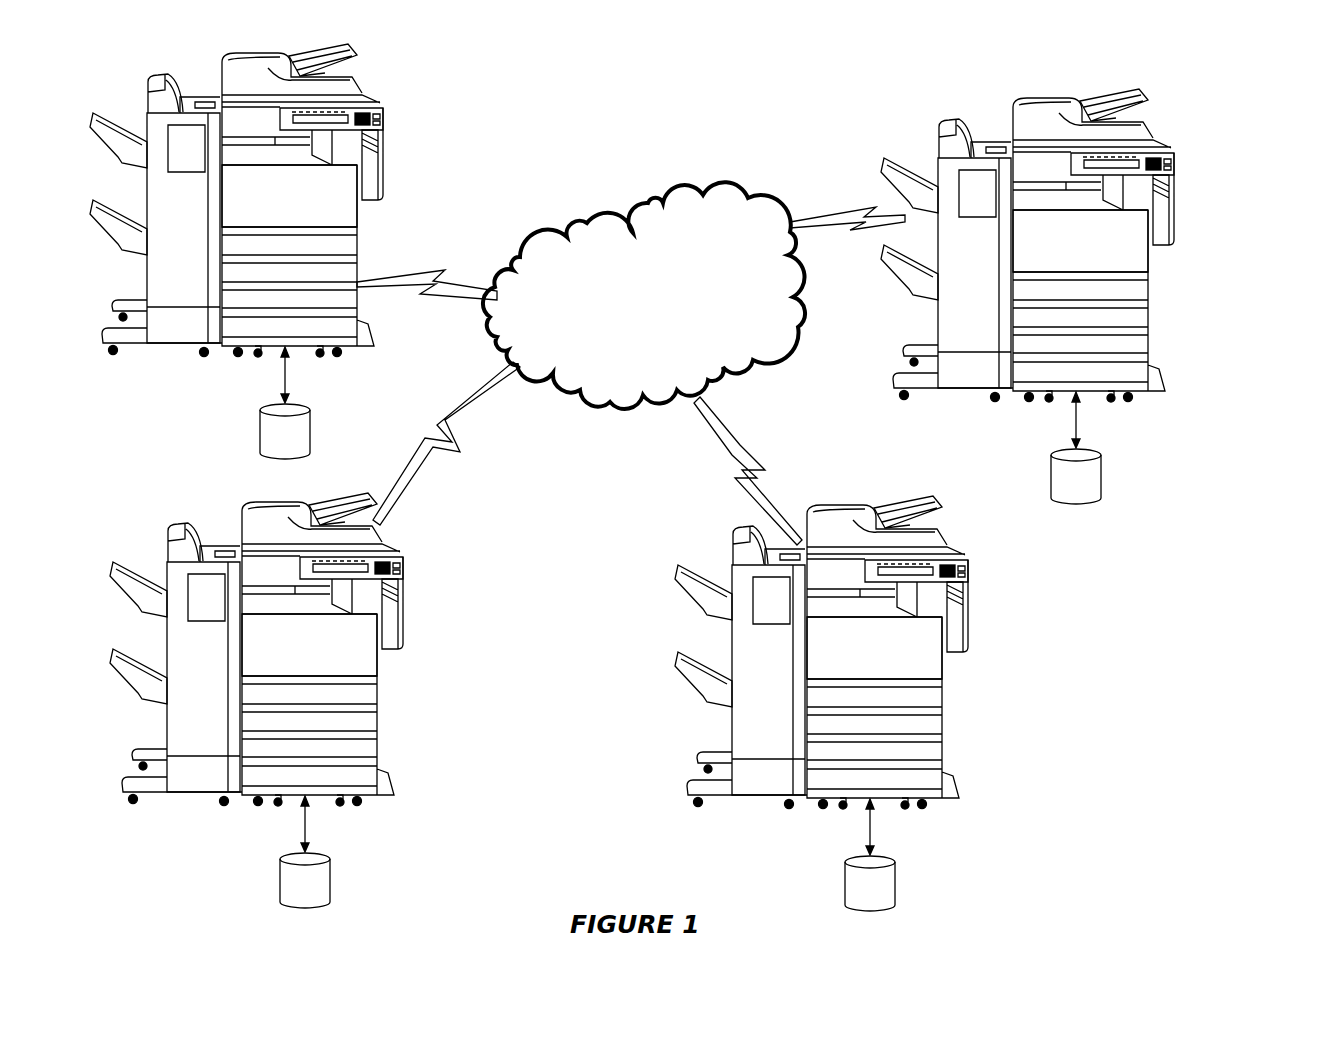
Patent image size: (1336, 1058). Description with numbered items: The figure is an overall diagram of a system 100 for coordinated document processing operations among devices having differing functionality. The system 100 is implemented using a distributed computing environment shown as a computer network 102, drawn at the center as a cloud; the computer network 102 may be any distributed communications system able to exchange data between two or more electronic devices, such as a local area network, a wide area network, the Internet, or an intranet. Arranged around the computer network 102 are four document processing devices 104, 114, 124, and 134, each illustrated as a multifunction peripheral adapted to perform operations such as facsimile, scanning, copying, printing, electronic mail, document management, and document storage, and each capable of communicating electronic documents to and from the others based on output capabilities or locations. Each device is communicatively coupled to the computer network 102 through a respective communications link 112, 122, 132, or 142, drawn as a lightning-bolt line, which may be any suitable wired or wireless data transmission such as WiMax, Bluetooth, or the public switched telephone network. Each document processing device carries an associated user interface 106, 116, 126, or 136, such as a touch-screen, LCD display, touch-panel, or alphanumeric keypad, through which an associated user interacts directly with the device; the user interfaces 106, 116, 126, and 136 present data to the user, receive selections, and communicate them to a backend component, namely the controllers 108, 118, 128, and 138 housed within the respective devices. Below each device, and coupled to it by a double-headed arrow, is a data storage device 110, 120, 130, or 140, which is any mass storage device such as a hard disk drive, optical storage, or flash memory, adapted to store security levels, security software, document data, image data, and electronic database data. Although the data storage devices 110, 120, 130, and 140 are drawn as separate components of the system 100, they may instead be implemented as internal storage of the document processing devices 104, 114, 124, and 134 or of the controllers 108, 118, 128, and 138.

The system 100 is at (1213, 708).
The computer network 102 is at (723, 174).
The document processing device 104 is at (297, 60).
The user interface 106 is at (386, 116).
The controller 108 is at (352, 215).
The data storage device 110 is at (311, 412).
The communications link 112 is at (432, 296).
The document processing device 114 is at (312, 505).
The user interface 116 is at (387, 565).
The controller 118 is at (349, 658).
The data storage device 120 is at (333, 878).
The communications link 122 is at (462, 428).
The document processing device 124 is at (877, 508).
The user interface 126 is at (952, 568).
The controller 128 is at (914, 661).
The data storage device 130 is at (898, 881).
The communications link 132 is at (737, 445).
The document processing device 134 is at (1083, 101).
The user interface 136 is at (1158, 161).
The controller 138 is at (1120, 254).
The data storage device 140 is at (1104, 474).
The communications link 142 is at (862, 232).